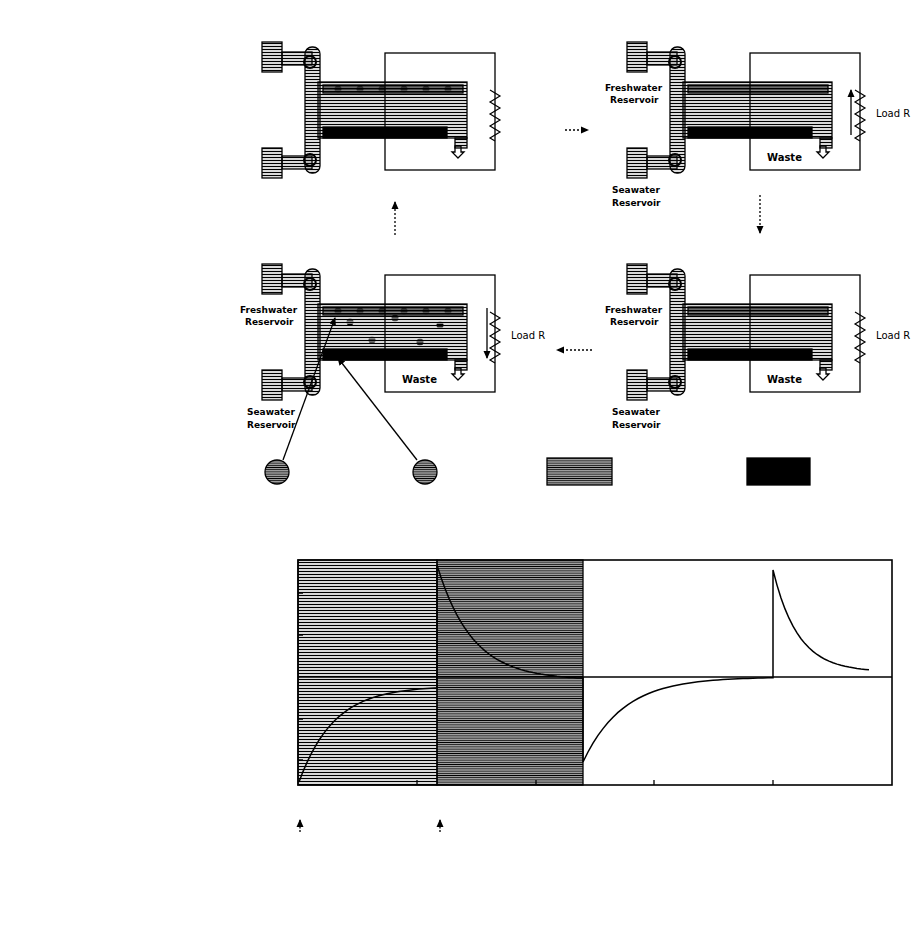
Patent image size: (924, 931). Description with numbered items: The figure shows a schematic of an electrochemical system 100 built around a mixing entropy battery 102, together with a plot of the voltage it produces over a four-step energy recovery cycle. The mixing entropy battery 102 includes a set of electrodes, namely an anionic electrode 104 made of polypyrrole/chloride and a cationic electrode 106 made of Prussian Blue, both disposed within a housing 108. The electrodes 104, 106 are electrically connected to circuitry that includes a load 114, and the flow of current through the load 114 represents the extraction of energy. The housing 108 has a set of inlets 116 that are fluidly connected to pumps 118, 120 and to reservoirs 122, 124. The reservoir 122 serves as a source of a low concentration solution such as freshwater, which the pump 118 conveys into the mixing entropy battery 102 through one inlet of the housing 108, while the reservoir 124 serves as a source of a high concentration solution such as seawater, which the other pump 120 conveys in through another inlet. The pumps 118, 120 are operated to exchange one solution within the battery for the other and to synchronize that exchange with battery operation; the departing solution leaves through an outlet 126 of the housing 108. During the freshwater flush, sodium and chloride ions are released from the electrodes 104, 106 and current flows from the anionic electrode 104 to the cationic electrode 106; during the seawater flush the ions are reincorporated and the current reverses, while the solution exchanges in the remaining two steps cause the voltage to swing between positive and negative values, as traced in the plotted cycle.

The electrochemical system 100 is at (148, 222).
The mixing entropy battery 102 is at (348, 112).
The anionic electrode 104 is at (447, 356).
The cationic electrode 106 is at (447, 316).
The housing 108 is at (319, 78).
The load 114 is at (551, 133).
The inlets 116 is at (308, 128).
The pump 118 is at (306, 58).
The pump 120 is at (307, 172).
The reservoir 122 is at (262, 278).
The reservoir 124 is at (253, 390).
The outlet 126 is at (470, 158).